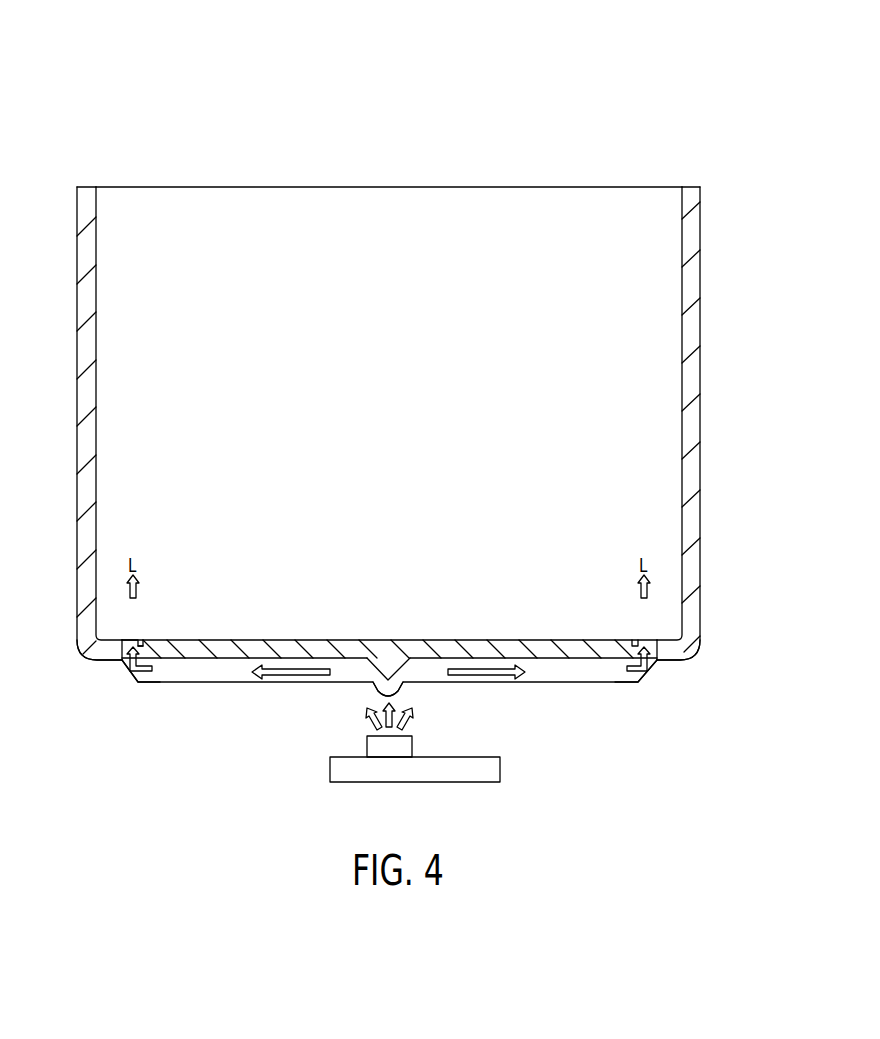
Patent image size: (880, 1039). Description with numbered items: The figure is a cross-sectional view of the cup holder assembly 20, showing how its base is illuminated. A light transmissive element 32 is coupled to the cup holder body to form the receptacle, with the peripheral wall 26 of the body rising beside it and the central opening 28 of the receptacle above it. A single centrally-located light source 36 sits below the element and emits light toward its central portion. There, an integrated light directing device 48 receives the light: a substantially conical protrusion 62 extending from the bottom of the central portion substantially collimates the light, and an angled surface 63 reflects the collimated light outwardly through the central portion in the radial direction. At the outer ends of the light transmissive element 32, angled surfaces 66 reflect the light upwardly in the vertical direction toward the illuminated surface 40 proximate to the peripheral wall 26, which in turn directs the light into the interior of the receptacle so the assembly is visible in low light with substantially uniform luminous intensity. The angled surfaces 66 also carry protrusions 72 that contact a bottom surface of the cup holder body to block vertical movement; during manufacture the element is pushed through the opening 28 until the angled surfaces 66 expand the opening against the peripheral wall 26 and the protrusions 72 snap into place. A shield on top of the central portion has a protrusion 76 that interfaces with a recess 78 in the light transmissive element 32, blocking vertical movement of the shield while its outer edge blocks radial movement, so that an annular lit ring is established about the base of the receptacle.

The cup holder assembly 20 is at (173, 102).
The peripheral wall 26 is at (702, 467).
The central opening 28 is at (440, 212).
The light transmissive element 32 is at (535, 684).
The light source 36 is at (503, 793).
The illuminated surface 40 is at (138, 640).
The light directing device 48 is at (386, 658).
The conical protrusion 62 is at (400, 694).
The angled surface 63 is at (389, 661).
The angled surface 66 is at (137, 676).
The protrusion 72 is at (122, 660).
The protrusion 76 is at (143, 650).
The recess 78 is at (638, 643).